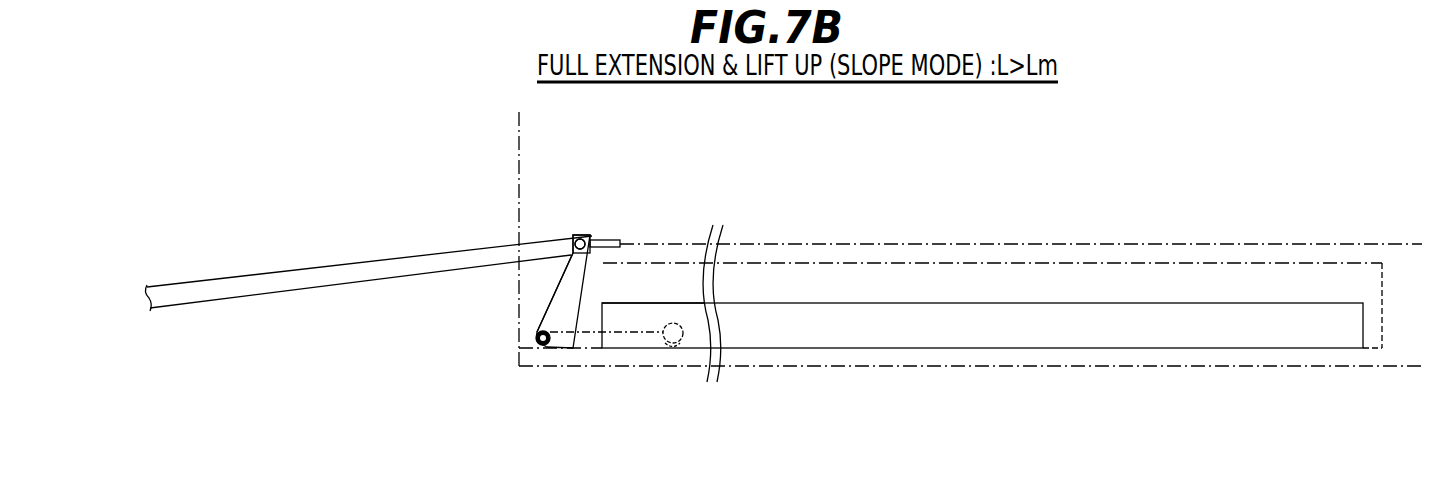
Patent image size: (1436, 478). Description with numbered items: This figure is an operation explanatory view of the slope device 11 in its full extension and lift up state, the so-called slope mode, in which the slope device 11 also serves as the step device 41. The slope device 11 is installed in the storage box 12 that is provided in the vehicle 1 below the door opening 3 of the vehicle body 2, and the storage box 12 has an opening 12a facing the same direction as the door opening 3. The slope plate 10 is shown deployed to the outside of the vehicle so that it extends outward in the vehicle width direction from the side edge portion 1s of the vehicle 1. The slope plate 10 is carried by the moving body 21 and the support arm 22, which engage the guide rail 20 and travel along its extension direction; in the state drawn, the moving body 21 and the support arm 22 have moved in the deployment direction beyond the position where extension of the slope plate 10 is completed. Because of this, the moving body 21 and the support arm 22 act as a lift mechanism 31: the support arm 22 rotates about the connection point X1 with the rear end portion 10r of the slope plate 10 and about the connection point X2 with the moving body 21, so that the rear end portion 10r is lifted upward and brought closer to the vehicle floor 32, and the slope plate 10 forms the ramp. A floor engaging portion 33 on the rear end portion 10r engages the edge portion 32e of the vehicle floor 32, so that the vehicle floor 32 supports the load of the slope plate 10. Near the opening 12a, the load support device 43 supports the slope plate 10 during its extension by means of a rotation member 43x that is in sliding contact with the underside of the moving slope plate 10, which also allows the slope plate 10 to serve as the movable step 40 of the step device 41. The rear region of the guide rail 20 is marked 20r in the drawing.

The vehicle 1 is at (952, 395).
The side edge portion 1s is at (952, 395).
The vehicle body 2 is at (519, 356).
The door opening 3 is at (523, 139).
The slope plate 10 is at (368, 263).
The movable step 40 is at (263, 273).
The rear end portion 10r is at (595, 237).
The slope device 11 is at (368, 201).
The step device 41 is at (368, 201).
The storage box 12 is at (1097, 263).
The opening 12a is at (603, 265).
The guide rail 20 is at (1012, 269).
The slider rear end 20r is at (1363, 297).
The moving body 21 is at (590, 349).
The support arm 22 is at (546, 313).
The lift mechanism 31 is at (502, 237).
The vehicle floor 32 is at (1021, 204).
The edge portion 32e is at (653, 245).
The floor engaging portion 33 is at (603, 240).
The load support device 43 is at (646, 393).
The rotation member 43x is at (673, 345).
The connection point X1 is at (577, 238).
The connection point X2 is at (546, 346).